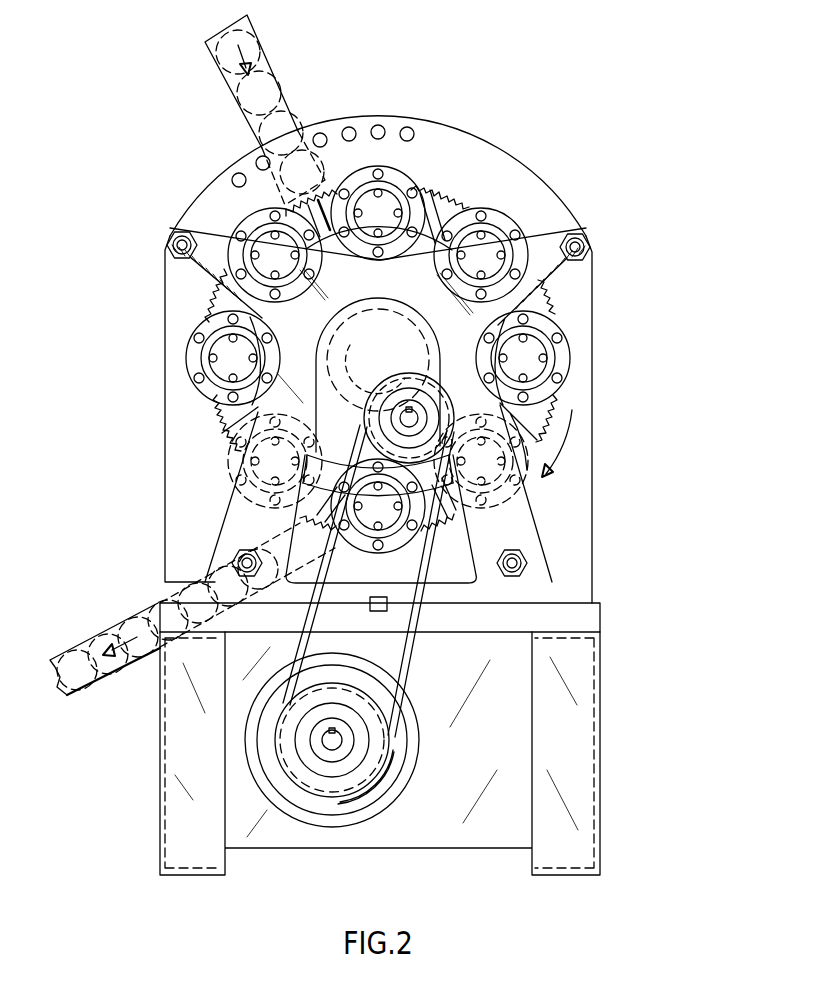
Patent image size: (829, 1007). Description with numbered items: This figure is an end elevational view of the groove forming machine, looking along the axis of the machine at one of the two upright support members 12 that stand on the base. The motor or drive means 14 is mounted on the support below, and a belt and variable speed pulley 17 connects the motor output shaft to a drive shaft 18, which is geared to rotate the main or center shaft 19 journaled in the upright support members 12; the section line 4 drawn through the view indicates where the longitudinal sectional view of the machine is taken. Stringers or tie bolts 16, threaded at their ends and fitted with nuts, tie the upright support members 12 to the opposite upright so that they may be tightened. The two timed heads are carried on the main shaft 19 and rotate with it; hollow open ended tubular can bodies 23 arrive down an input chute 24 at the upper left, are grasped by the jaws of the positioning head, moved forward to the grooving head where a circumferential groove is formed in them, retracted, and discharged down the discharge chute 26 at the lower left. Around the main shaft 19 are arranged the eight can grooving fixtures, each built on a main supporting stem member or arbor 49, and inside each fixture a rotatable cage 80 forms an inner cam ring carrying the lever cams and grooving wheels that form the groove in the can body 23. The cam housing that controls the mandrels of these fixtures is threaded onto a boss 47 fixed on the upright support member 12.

The section line 4- 4 is at (450, 468).
The upright support member 12 is at (530, 530).
The motor or drive means 14 is at (317, 813).
The stringers or tie bolts 16 is at (176, 245).
The belt and variable speed pulley 17 is at (404, 656).
The drive shaft 18 is at (399, 418).
The main or center shaft 19 is at (378, 375).
The can bodies 23 is at (244, 121).
The input chute 24 is at (283, 86).
The discharge chute 26 is at (85, 679).
The boss 47 is at (397, 244).
The main supporting stem member or arbor 49 is at (268, 223).
The cage 80 is at (583, 450).